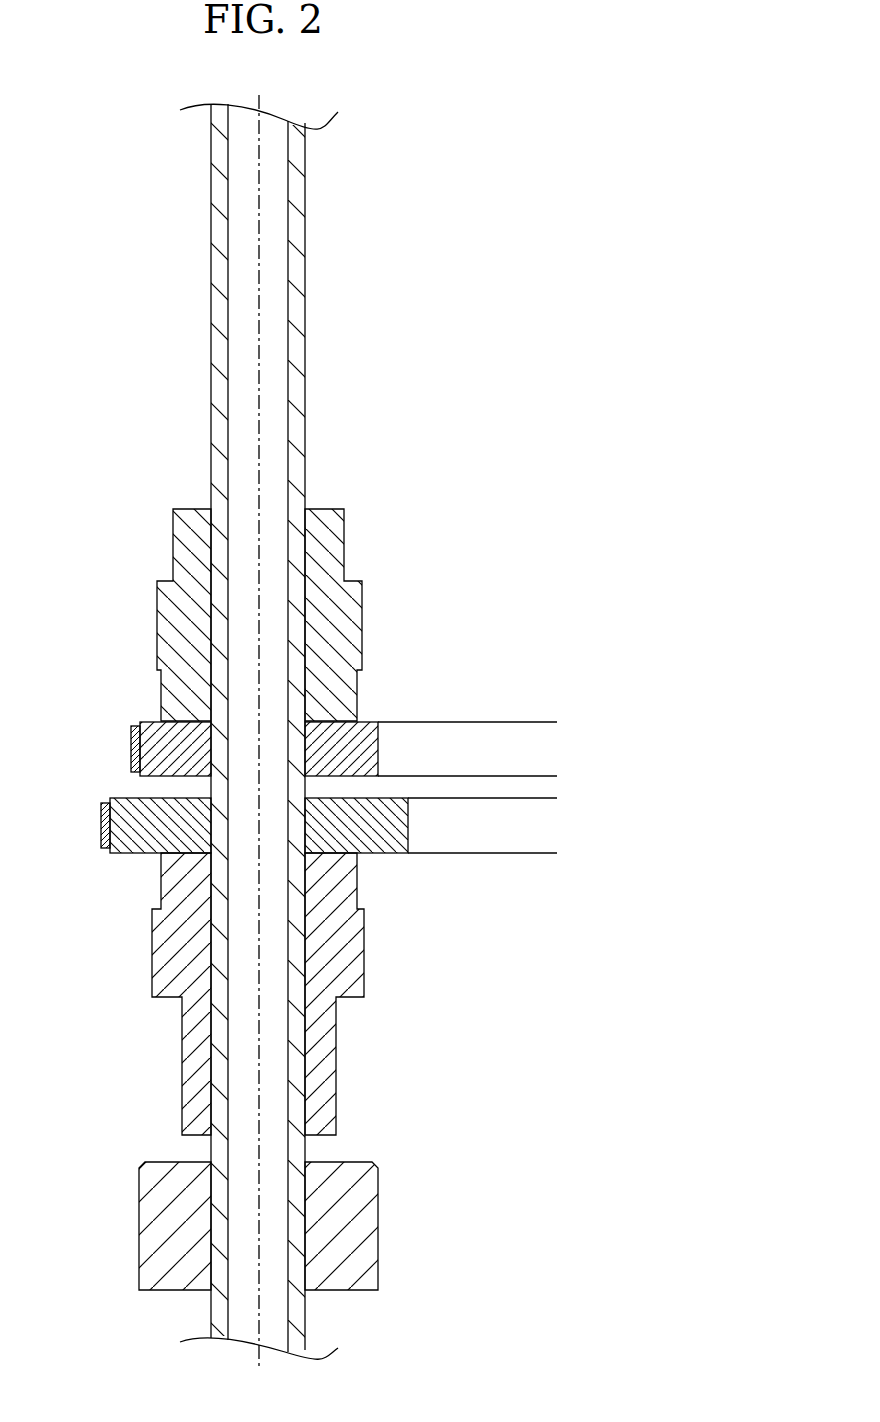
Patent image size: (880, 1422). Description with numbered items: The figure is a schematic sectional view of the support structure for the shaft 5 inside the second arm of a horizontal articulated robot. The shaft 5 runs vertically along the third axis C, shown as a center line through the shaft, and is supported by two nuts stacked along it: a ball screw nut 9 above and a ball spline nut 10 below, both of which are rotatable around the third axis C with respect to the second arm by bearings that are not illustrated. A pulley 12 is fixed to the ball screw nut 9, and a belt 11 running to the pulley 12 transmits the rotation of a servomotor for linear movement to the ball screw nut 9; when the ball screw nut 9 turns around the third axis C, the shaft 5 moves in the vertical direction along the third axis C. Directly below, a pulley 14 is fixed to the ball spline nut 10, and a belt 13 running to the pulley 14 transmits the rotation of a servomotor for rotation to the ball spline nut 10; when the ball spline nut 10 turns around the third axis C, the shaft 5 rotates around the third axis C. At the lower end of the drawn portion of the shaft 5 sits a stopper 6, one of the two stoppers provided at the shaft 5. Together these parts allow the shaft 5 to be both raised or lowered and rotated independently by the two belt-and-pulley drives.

The shaft 5 is at (305, 280).
The third axis C is at (259, 193).
The ball screw nut 9 is at (173, 552).
The pulley 12 is at (161, 721).
The belt 11 is at (484, 722).
The pulley 14 is at (135, 853).
The belt 13 is at (497, 853).
The ball spline nut 10 is at (182, 1083).
The stopper 6 is at (378, 1210).